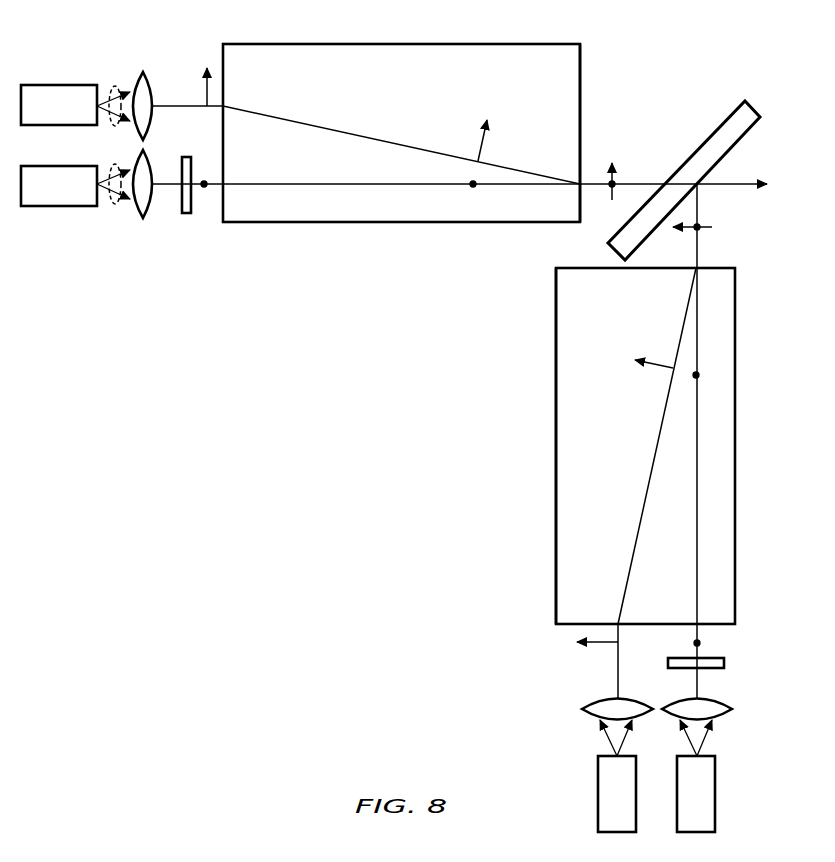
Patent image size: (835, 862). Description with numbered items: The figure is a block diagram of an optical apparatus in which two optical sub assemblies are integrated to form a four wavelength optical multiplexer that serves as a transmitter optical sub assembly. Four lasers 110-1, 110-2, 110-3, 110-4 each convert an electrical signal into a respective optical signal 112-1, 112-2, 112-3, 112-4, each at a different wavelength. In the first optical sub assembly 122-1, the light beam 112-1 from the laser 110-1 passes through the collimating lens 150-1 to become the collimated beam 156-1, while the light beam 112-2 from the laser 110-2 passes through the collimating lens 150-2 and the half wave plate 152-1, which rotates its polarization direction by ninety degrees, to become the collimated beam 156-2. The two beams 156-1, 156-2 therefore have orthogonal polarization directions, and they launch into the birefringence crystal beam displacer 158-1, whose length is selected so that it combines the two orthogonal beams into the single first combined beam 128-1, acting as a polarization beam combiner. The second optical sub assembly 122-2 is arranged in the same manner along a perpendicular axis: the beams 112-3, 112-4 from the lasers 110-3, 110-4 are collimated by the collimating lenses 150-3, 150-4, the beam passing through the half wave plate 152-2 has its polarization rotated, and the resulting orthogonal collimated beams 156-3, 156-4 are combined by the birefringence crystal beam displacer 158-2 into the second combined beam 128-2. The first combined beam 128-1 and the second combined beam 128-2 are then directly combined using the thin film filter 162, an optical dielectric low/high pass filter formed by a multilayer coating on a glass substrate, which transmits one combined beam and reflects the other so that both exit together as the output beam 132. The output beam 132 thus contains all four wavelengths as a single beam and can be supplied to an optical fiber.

The laser 110-1 is at (60, 85).
The laser 110-2 is at (60, 206).
The laser 110-3 is at (598, 795).
The laser 110-4 is at (715, 795).
The optical signal 112-1 is at (113, 87).
The optical signal 112-2 is at (114, 204).
The optical signal 112-3 is at (602, 735).
The optical signal 112-4 is at (710, 735).
The first optical sub assembly 122-1 is at (310, 272).
The second optical sub assembly 122-2 is at (455, 403).
The first combined beam 128-1 is at (636, 184).
The second combined beam 128-2 is at (698, 256).
The output beam 132 is at (730, 186).
The collimating lens 150-1 is at (152, 82).
The collimating lens 150-2 is at (140, 152).
The collimating lens 150-3 is at (585, 712).
The collimating lens 150-4 is at (755, 690).
The half wave plate 152-1 is at (180, 215).
The half wave plate 152-2 is at (675, 658).
The collimated beam 156-1 is at (206, 110).
The collimated beam 156-2 is at (204, 190).
The collimated beam 156-3 is at (617, 672).
The collimated beam 156-4 is at (700, 641).
The birefringence crystal beam displacer 158-1 is at (580, 90).
The birefringence crystal beam displacer 158-2 is at (556, 450).
The thin film filter 162 is at (702, 140).